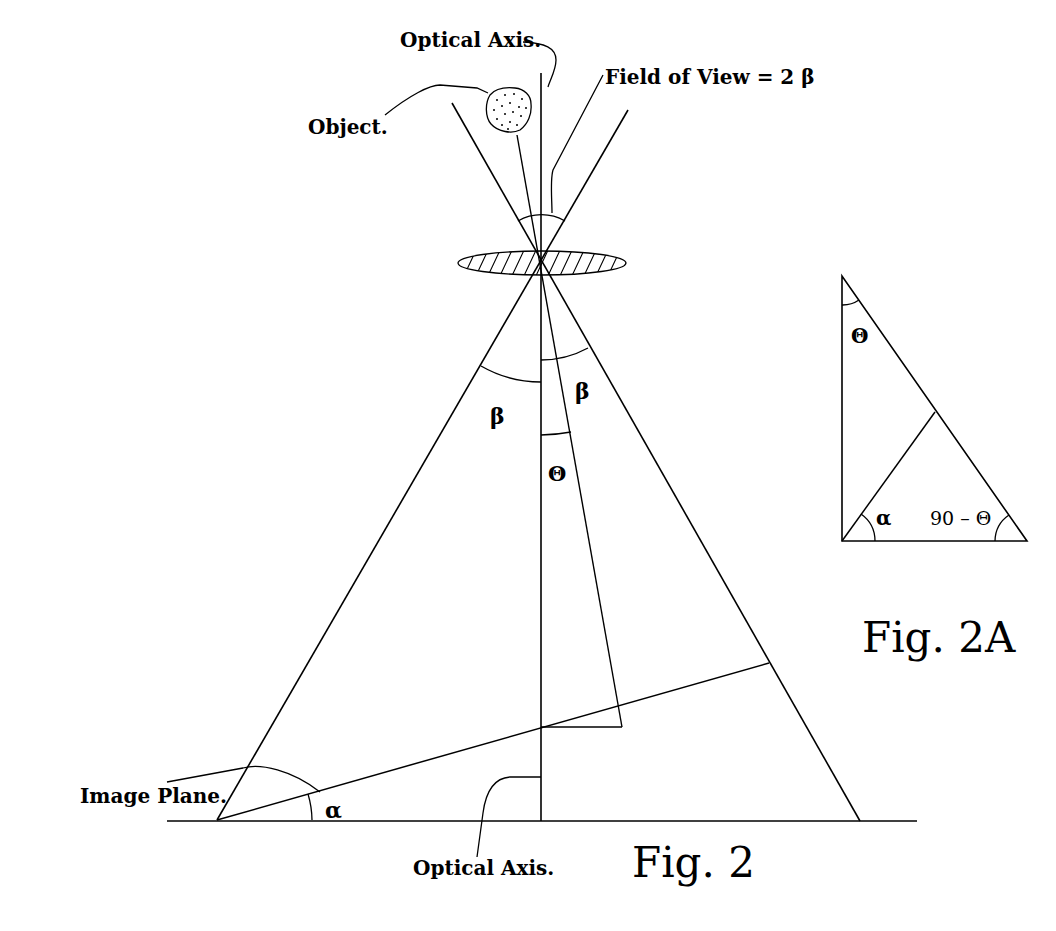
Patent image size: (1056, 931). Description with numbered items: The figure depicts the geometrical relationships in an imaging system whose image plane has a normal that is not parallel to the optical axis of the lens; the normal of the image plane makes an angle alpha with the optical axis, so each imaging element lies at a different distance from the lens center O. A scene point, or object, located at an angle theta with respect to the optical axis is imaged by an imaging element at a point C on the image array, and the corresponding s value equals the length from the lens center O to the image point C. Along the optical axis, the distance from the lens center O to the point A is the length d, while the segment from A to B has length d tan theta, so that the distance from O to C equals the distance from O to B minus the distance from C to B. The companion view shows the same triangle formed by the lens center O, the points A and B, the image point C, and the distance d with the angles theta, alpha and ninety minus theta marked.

In FIG. 2, the lens center O is at (546, 247).
In FIG. 2A, the lens center O is at (934, 400).
In FIG. 2, the point A on the optical axis A is at (499, 721).
In FIG. 2A, the point A on the optical axis A is at (837, 573).
In FIG. 2, the point B is at (651, 755).
In FIG. 2A, the point B is at (1028, 585).
In FIG. 2, the image point C on the image array C is at (592, 703).
In FIG. 2A, the image point C on the image array C is at (908, 476).
In FIG. 2, the distance d along the optical axis d is at (524, 447).
In FIG. 2A, the distance d along the optical axis d is at (821, 421).